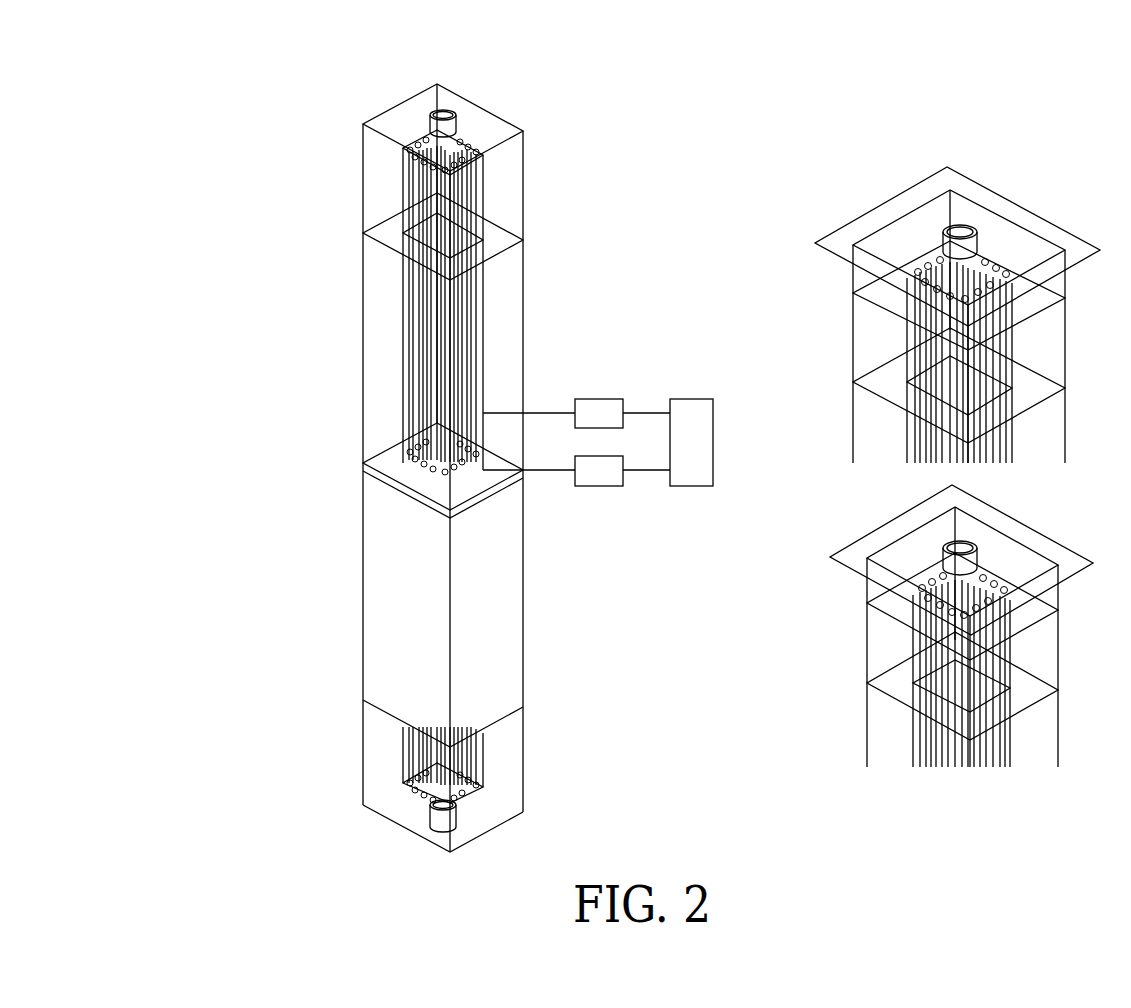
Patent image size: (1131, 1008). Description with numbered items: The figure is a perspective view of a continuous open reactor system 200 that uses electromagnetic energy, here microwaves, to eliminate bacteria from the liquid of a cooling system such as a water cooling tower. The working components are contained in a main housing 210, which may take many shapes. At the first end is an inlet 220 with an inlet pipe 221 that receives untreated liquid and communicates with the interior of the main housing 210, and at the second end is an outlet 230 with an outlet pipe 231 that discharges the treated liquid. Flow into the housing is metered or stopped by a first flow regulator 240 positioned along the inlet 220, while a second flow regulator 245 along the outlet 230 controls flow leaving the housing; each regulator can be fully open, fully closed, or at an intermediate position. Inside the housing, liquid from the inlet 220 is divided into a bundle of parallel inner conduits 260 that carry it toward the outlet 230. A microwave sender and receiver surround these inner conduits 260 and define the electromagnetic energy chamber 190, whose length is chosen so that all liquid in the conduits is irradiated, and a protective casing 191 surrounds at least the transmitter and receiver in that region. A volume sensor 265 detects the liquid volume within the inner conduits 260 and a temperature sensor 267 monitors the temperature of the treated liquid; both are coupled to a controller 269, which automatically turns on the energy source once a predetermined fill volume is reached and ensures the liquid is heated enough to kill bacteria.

The system 200 is at (618, 72).
The inlet 220 is at (327, 90).
The inlet pipe 221 is at (436, 116).
The main housing 210 is at (361, 216).
The electromagnetic energy chamber 190 is at (403, 316).
The inner conduits 260 is at (405, 368).
The protective casing 191 is at (361, 530).
The second flow regulator 245 is at (405, 770).
The outlet pipe 231 is at (432, 815).
The outlet 230 is at (372, 858).
The first flow regulator 240 is at (928, 565).
The volume sensor 265 is at (600, 399).
The temperature sensor 267 is at (612, 486).
The controller 269 is at (695, 487).